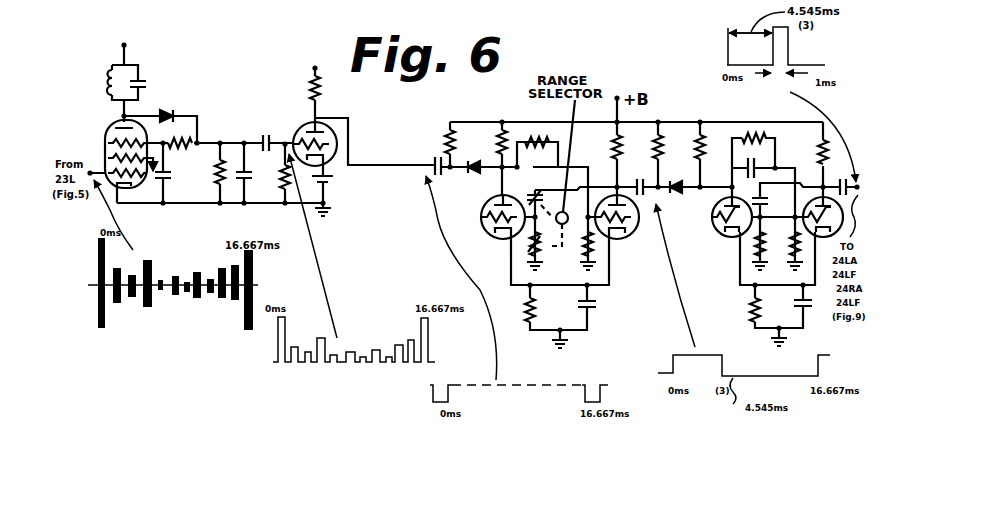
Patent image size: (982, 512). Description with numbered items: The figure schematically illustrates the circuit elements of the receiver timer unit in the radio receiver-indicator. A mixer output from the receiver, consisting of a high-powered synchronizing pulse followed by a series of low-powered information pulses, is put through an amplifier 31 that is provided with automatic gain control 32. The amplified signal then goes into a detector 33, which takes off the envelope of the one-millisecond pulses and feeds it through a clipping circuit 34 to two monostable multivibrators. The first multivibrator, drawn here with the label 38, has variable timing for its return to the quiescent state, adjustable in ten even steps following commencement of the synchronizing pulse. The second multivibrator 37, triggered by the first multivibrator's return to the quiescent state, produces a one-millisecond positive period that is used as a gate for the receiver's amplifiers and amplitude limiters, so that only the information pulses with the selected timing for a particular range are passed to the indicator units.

The amplifier 31 is at (86, 131).
The automatic gain control 32 is at (166, 147).
The detector 33 is at (241, 132).
The clipping circuit 34 is at (337, 131).
The second multivibrator 37 is at (720, 269).
The multivibrator 38 is at (497, 270).